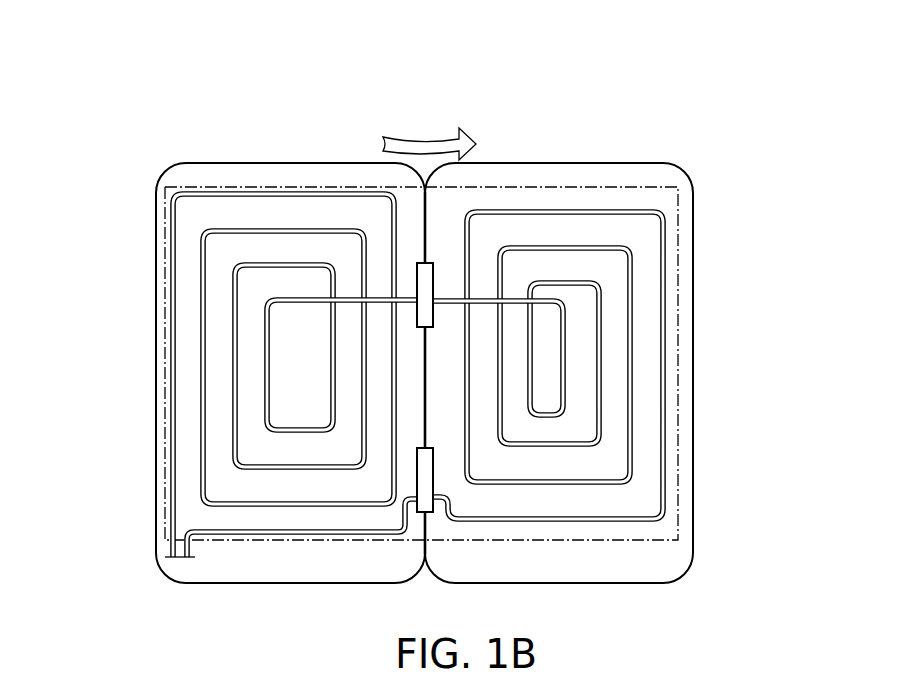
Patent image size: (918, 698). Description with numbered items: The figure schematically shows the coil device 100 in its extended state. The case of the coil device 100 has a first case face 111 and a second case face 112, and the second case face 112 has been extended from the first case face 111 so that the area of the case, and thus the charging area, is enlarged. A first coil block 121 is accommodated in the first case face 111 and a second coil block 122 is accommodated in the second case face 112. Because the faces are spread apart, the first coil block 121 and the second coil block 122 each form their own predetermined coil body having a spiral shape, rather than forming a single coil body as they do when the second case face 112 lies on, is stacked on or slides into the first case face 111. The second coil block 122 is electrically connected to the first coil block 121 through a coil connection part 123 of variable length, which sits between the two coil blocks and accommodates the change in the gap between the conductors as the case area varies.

The coil device 100 is at (416, 301).
The first case face 111 is at (277, 172).
The second case face 112 is at (568, 170).
The first coil block 121 is at (185, 198).
The second coil block 122 is at (627, 213).
The coil connection part 123 is at (448, 300).